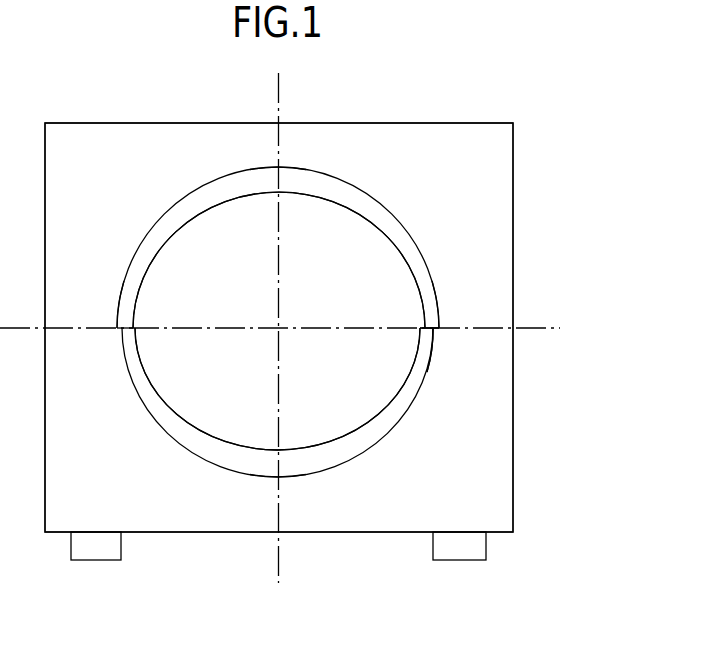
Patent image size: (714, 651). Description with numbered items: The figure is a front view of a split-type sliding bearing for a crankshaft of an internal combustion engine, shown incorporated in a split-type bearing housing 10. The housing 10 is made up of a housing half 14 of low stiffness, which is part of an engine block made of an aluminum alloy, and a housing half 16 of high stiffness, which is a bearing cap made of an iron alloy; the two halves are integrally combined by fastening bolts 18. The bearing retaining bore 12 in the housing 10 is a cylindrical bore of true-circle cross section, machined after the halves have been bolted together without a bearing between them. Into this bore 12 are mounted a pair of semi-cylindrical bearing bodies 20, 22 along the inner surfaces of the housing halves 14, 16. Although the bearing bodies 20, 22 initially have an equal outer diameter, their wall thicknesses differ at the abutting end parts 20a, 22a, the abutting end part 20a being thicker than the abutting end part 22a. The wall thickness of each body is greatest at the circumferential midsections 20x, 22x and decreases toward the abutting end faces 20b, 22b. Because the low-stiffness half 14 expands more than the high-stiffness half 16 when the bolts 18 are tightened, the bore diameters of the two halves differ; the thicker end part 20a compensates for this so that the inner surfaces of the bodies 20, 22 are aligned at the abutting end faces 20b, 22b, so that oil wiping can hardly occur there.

The split-type bearing housing 10 is at (409, 96).
The bearing retaining bore 12 is at (388, 222).
The housing half 14 is at (502, 223).
The housing half 16 is at (502, 430).
The fastening bolts 18 is at (95, 553).
The semi-cylindrical bearing body 20 is at (195, 202).
The circumferentially midsection 20x is at (288, 183).
The abutting end part 20a is at (430, 305).
The abutting end face 20b is at (110, 336).
The semi-cylindrical bearing body 22 is at (195, 445).
The circumferentially midsection 22x is at (288, 463).
The abutting end part 22a is at (423, 353).
The abutting end face 22b is at (416, 316).